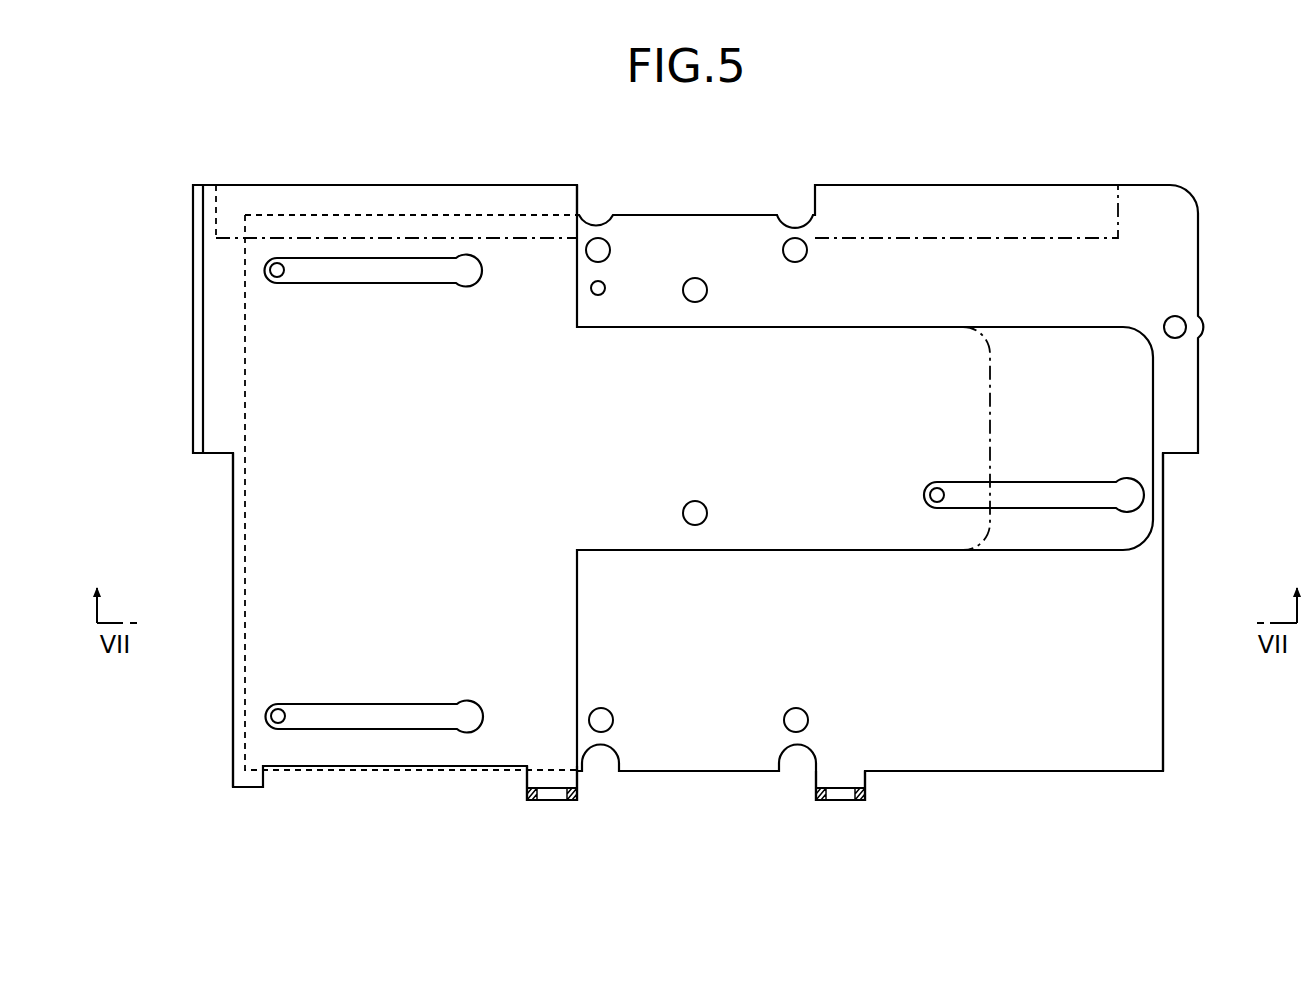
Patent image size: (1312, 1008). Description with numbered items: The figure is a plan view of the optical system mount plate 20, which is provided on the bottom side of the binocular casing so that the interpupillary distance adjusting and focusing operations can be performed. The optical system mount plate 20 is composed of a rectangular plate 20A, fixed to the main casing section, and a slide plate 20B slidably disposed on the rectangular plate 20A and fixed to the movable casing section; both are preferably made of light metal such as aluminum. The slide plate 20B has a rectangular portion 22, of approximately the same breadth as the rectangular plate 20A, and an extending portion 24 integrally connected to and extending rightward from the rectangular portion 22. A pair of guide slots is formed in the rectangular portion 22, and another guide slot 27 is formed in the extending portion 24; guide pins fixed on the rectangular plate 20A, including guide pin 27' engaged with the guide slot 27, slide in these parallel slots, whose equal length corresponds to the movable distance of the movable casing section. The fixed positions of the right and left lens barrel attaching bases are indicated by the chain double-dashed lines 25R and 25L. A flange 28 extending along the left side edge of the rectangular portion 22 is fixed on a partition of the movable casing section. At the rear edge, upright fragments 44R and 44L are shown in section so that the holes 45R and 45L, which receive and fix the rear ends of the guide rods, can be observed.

The optical system mount plate 20 is at (719, 197).
The rectangular plate 20A is at (1167, 580).
The slide plate 20B is at (229, 563).
The rectangular portion 22 is at (412, 446).
The extending portion 24 is at (755, 446).
The chain double-dashed line 25L is at (526, 243).
The chain double-dashed line 25R is at (945, 243).
The guide slot 27 is at (1034, 468).
The guide pin 27' is at (937, 465).
The flange 28 is at (193, 297).
The upright fragment 44L is at (530, 802).
The upright fragment 44R is at (816, 802).
The hole 45L is at (560, 802).
The hole 45R is at (845, 802).